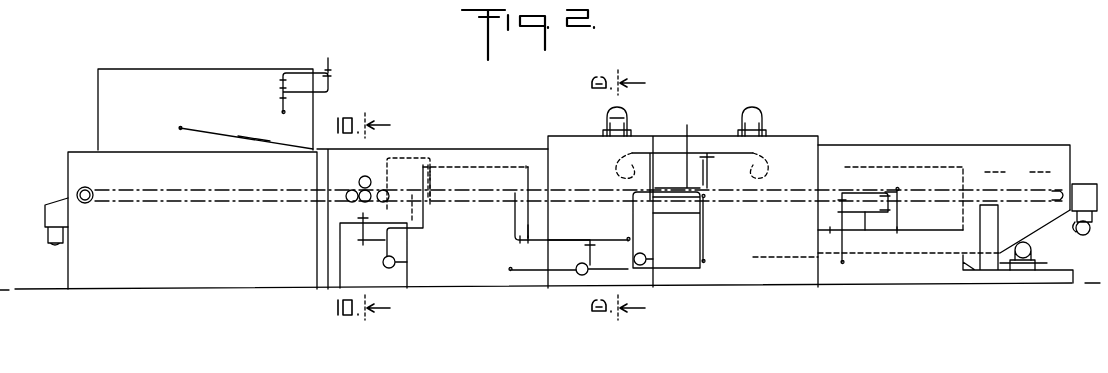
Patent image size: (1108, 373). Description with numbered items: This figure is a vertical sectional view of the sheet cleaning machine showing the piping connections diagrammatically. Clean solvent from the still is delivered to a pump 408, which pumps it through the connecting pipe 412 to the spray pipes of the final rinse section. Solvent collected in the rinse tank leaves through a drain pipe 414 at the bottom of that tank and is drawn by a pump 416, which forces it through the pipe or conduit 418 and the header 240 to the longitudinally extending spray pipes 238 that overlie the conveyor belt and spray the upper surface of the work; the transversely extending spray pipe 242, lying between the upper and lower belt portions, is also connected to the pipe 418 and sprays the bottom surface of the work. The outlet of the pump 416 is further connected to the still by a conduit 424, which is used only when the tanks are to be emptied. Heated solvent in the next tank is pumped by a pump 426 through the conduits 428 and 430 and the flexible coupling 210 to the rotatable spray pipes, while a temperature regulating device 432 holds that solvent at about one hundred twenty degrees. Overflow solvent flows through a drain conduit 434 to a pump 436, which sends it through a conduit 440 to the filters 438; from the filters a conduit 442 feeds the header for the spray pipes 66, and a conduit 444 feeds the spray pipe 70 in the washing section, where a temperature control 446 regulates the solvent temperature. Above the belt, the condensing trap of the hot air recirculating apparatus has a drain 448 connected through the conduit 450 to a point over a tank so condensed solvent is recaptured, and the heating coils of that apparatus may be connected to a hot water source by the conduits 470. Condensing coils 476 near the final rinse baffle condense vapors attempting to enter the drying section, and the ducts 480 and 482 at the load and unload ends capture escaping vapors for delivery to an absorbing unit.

The spray pipes 66 is at (882, 165).
The spray pipe 70 is at (915, 184).
The flexible coupling 210 is at (765, 162).
The spray pipes 238 is at (490, 162).
The header 240 is at (530, 226).
The spray pipe 242 is at (514, 213).
The pump 408 is at (392, 268).
The connecting pipe 412 is at (424, 229).
The drain pipe 414 is at (525, 274).
The pump 416 is at (578, 273).
The pipe or conduit 418 is at (556, 246).
The conduit 424 is at (620, 229).
The pump 426 is at (645, 265).
The conduit 428 is at (646, 238).
The conduit 430 is at (690, 152).
The temperature regulating device 432 is at (705, 242).
The drain conduit 434 is at (790, 238).
The pump 436 is at (1033, 250).
The filters 438 is at (992, 266).
The conduit 440 is at (1010, 270).
The conduit 442 is at (962, 206).
The conduit 444 is at (925, 247).
The temperature control 446 is at (866, 225).
The drain 448 is at (181, 128).
The conduit 450 is at (250, 128).
The conduits 470 is at (330, 72).
The condensing coils 476 is at (387, 172).
The duct 480 is at (1092, 232).
The duct 482 is at (52, 242).